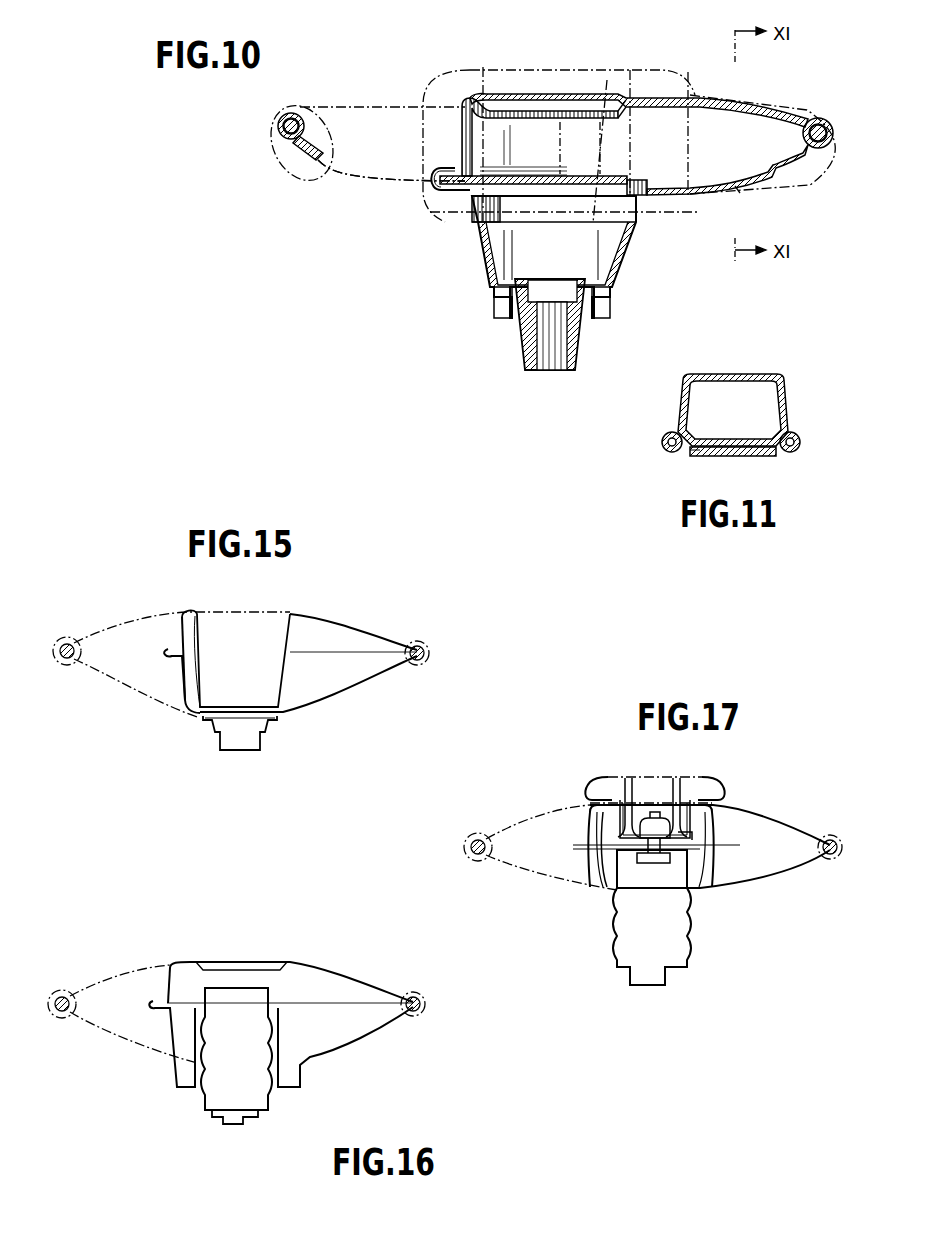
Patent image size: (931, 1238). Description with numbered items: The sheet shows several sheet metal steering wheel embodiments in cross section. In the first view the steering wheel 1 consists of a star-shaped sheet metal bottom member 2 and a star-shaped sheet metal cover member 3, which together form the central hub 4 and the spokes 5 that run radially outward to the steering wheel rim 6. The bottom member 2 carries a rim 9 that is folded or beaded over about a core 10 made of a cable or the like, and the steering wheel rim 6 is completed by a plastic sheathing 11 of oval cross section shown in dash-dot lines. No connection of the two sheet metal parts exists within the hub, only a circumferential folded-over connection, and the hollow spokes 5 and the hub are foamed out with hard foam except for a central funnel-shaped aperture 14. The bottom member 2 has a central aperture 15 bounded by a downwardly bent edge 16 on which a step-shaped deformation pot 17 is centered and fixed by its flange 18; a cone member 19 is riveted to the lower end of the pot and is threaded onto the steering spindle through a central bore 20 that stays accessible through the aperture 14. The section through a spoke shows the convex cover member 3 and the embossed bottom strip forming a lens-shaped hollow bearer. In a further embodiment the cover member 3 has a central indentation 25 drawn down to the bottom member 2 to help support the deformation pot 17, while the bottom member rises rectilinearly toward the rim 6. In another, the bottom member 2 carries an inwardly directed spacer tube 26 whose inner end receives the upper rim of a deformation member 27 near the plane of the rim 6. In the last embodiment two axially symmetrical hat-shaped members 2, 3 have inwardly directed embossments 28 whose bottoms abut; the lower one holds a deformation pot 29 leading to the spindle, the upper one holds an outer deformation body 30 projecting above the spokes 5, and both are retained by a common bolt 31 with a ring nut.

In FIG. 10, the steering wheel 1 is at (475, 52).
In FIG. 10, the sheet metal bottom member 2 is at (700, 197).
In FIG. 11, the sheet metal bottom member 2 is at (756, 457).
In FIG. 15, the sheet metal bottom member 2 is at (338, 697).
In FIG. 16, the sheet metal bottom member 2 is at (343, 1047).
In FIG. 17, the sheet metal bottom member 2 is at (750, 884).
In FIG. 10, the sheet metal cover member 3 is at (716, 99).
In FIG. 11, the sheet metal cover member 3 is at (720, 374).
In FIG. 15, the sheet metal cover member 3 is at (330, 620).
In FIG. 16, the sheet metal cover member 3 is at (305, 964).
In FIG. 17, the sheet metal cover member 3 is at (772, 817).
In FIG. 10, the hub 4 is at (510, 147).
In FIG. 15, the hub 4 is at (200, 686).
In FIG. 16, the hub 4 is at (192, 1062).
In FIG. 17, the hub 4 is at (608, 855).
In FIG. 10, the spokes 5 is at (740, 130).
In FIG. 11, the spokes 5 is at (748, 403).
In FIG. 15, the spokes 5 is at (356, 642).
In FIG. 16, the spokes 5 is at (346, 994).
In FIG. 17, the spokes 5 is at (760, 860).
In FIG. 15, the steering wheel rim 6 is at (426, 646).
In FIG. 16, the steering wheel rim 6 is at (416, 996).
In FIG. 17, the steering wheel rim 6 is at (831, 836).
In FIG. 10, the rim 9 is at (824, 117).
In FIG. 10, the core 10 is at (285, 125).
In FIG. 10, the sheathing 11 is at (312, 173).
In FIG. 10, the funnel-shaped aperture 14 is at (578, 137).
In FIG. 10, the aperture 15 is at (506, 198).
In FIG. 10, the edge 16 is at (474, 199).
In FIG. 10, the deformation pot 17 is at (612, 252).
In FIG. 15, the deformation pot 17 is at (268, 727).
In FIG. 10, the flange 18 is at (647, 198).
In FIG. 10, the cone member 19 is at (524, 338).
In FIG. 10, the central bore 20 is at (560, 335).
In FIG. 15, the indentation 25 is at (200, 637).
In FIG. 16, the spacer tube 26 is at (280, 1038).
In FIG. 16, the deformation member 27 is at (268, 1083).
In FIG. 17, the embossment 28 is at (608, 866).
In FIG. 17, the deformation pot 29 is at (690, 924).
In FIG. 17, the deformation body 30 is at (604, 781).
In FIG. 17, the bolt 31 is at (656, 866).